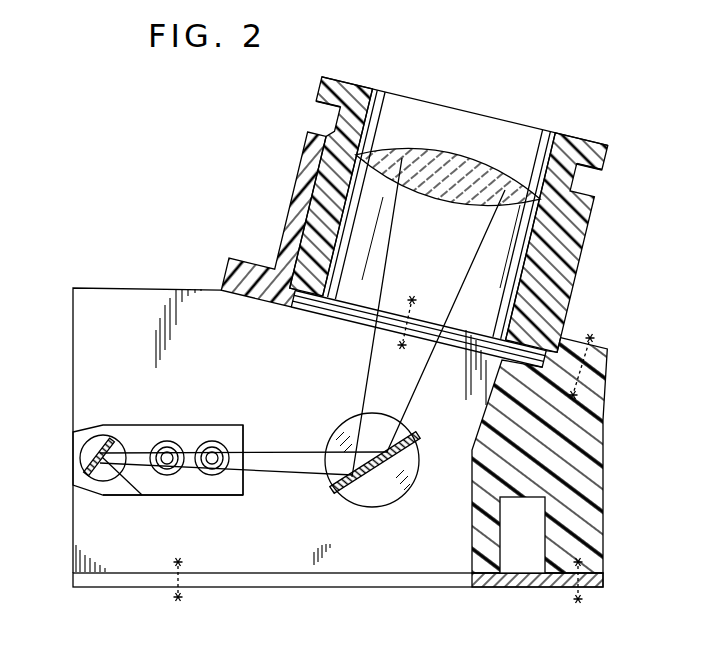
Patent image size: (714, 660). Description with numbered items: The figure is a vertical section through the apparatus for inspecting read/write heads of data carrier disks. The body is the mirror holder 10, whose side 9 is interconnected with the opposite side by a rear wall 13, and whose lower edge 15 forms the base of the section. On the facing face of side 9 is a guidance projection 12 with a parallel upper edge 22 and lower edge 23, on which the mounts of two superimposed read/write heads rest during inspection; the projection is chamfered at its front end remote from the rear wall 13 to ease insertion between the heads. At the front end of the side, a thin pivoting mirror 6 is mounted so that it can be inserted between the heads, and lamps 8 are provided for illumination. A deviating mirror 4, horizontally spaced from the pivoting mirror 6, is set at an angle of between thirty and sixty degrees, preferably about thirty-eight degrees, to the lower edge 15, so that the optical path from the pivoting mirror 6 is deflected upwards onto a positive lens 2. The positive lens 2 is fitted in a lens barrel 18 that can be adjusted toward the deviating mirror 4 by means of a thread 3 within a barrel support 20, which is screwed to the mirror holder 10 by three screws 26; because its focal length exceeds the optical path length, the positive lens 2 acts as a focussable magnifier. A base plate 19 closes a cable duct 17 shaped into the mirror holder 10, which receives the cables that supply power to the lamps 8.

The positive lens 2 is at (440, 160).
The thread 3 is at (580, 192).
The deviating mirror 4 is at (370, 482).
The pivoting mirror 6 is at (80, 465).
The lamps 8 is at (205, 437).
The side 9 is at (95, 295).
The mirror holder 10 is at (612, 400).
The guidance projections 12 is at (227, 487).
The rear wall 13 is at (570, 480).
The lower edge 15 is at (252, 574).
The cable duct 17 is at (533, 552).
The lens barrel 18 is at (590, 132).
The base plate 19 is at (490, 580).
The barrel support 20 is at (582, 246).
The upper edge 22 is at (142, 423).
The lower edge 23 is at (181, 497).
The screws 26 is at (411, 297).